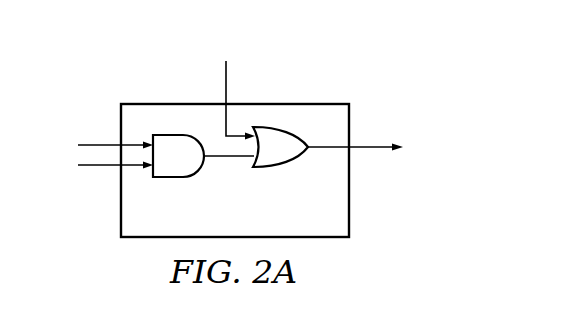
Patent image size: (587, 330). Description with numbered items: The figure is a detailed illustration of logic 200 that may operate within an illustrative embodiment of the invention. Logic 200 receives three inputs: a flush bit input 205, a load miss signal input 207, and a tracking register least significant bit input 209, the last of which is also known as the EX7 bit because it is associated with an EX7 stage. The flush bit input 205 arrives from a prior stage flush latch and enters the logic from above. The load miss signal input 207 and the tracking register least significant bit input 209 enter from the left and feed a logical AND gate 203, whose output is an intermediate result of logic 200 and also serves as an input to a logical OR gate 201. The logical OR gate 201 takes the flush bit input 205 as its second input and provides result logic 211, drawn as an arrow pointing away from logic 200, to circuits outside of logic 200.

The logic 200 is at (398, 191).
The logical OR gate 201 is at (292, 164).
The logical AND gate 203 is at (177, 178).
The flush bit input 205 is at (226, 86).
The load miss signal input 207 is at (100, 143).
The tracking register least significant bit input 209 is at (100, 167).
The result logic 211 is at (370, 144).